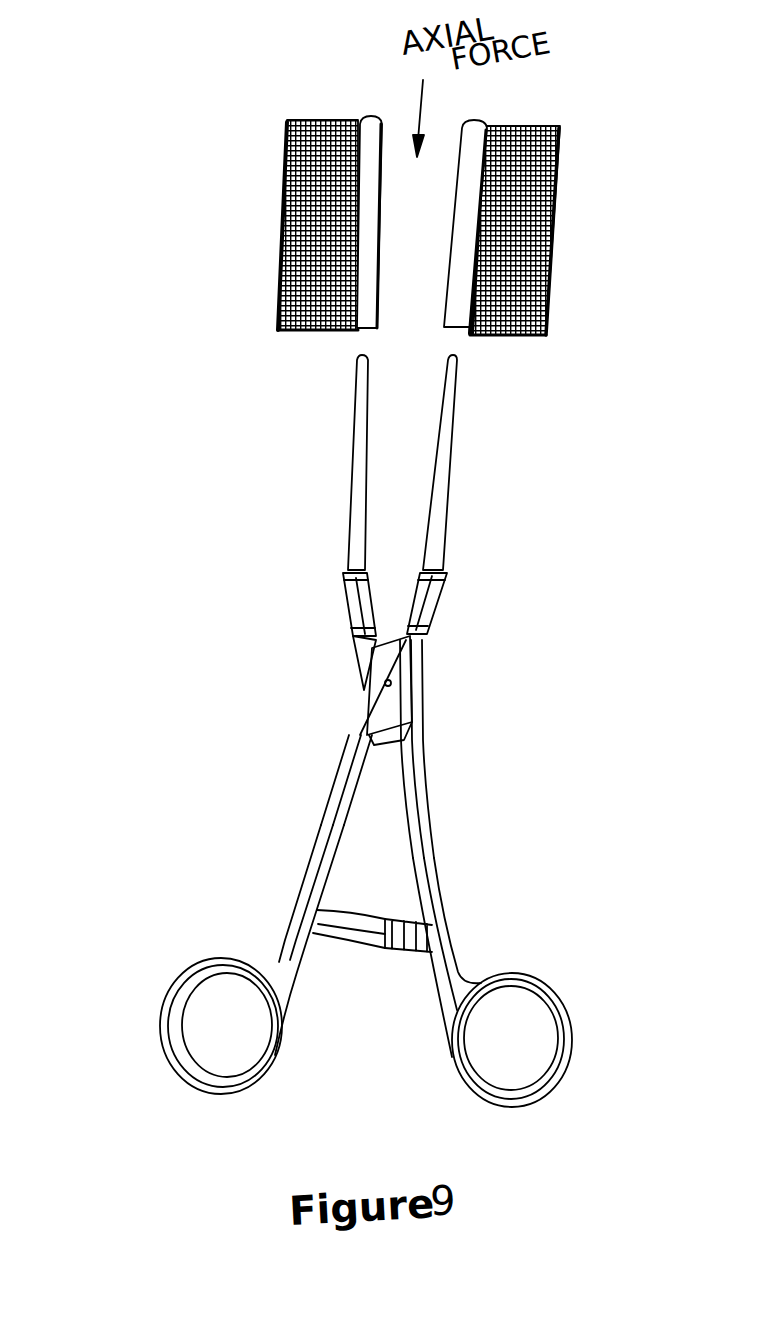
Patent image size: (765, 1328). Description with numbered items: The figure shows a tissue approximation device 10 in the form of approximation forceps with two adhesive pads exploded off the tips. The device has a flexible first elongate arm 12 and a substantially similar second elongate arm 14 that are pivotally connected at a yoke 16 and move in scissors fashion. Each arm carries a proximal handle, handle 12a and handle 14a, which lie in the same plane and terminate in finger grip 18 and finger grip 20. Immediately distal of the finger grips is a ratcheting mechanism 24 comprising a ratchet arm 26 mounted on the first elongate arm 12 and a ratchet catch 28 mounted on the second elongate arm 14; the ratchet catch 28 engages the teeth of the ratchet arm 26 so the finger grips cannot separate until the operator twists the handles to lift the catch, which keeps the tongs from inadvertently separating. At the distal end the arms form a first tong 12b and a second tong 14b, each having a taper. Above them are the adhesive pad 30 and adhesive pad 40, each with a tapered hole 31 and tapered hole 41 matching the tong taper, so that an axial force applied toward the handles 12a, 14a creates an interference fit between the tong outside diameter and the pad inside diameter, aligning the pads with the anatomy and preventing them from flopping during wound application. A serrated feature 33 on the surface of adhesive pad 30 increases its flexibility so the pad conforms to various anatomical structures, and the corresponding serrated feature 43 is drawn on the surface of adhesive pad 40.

The tissue approximation device 10 is at (548, 665).
The first elongate arm 12 is at (446, 812).
The handle of first elongate arm 12a is at (458, 903).
The first tong 12b is at (458, 455).
The second elongate arm 14 is at (315, 806).
The handle of second elongate arm 14a is at (290, 935).
The second tong 14b is at (350, 453).
The yoke 16 is at (393, 683).
The finger grip 18 is at (560, 985).
The finger grip 20 is at (165, 1010).
The ratcheting mechanism 24 is at (371, 910).
The ratchet arm 26 is at (408, 952).
The ratchet catch 28 is at (333, 930).
The adhesive pad 30 is at (562, 240).
The tapered hole 31 is at (447, 335).
The serrated feature 33 is at (545, 328).
The adhesive pad 40 is at (275, 237).
The tapered hole 41 is at (363, 330).
The second pad sponge 43 is at (297, 275).